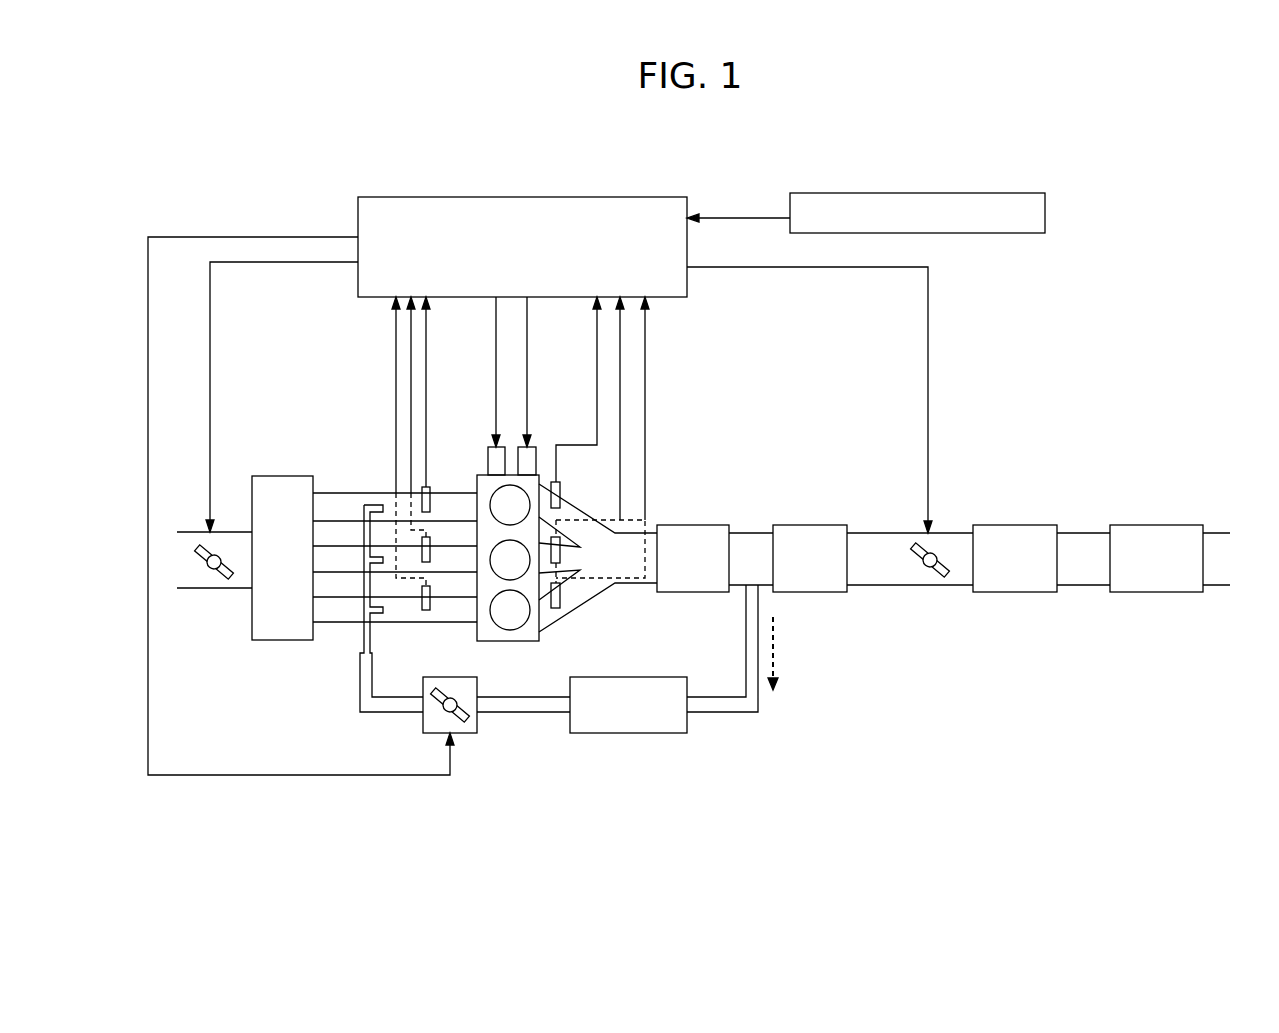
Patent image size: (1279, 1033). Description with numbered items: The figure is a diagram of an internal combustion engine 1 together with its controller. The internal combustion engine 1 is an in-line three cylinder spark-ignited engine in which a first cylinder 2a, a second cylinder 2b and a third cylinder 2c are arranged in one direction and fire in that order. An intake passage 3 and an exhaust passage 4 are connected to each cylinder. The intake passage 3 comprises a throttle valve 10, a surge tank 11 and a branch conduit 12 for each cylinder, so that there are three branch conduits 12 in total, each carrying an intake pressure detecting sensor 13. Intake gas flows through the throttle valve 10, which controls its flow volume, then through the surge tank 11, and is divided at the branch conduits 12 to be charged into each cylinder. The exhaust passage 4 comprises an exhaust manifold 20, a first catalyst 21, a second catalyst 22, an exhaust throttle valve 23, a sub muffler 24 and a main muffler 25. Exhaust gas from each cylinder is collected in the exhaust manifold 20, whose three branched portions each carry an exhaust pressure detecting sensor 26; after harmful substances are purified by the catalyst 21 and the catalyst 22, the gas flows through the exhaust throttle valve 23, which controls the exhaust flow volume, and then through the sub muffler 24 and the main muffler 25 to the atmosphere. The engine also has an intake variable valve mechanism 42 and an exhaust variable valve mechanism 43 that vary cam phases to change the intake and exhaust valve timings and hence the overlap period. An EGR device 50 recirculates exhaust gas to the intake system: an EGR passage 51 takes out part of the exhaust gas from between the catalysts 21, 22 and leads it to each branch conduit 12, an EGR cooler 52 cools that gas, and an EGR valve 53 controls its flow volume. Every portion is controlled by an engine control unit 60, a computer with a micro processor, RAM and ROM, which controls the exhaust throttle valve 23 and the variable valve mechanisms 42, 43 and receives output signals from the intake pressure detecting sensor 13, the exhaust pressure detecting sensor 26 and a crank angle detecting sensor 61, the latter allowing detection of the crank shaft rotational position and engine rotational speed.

The internal combustion engine 1 is at (548, 794).
The first cylinder 2a is at (498, 507).
The second cylinder 2b is at (498, 563).
The third cylinder 2c is at (518, 622).
The intake passage 3 is at (286, 430).
The exhaust passage 4 is at (1087, 464).
The throttle valve 10 is at (222, 577).
The surge tank 11 is at (280, 627).
The branch conduit 12 is at (338, 562).
The intake pressure detecting sensor 13 is at (430, 500).
The exhaust manifold 20 is at (590, 590).
The first catalyst 21 is at (690, 543).
The second catalyst 22 is at (807, 543).
The exhaust throttle valve 23 is at (937, 580).
The sub muffler 24 is at (1010, 543).
The main muffler 25 is at (1147, 543).
The exhaust pressure detecting sensor 26 is at (562, 490).
The intake variable valve mechanism 42 is at (493, 460).
The exhaust variable valve mechanism 43 is at (528, 460).
The EGR device 50 is at (722, 738).
The EGR passage 51 is at (527, 707).
The EGR cooler 52 is at (612, 718).
The EGR valve 53 is at (465, 722).
The engine control unit 60 is at (522, 197).
The crank angle detecting sensor 61 is at (1045, 210).